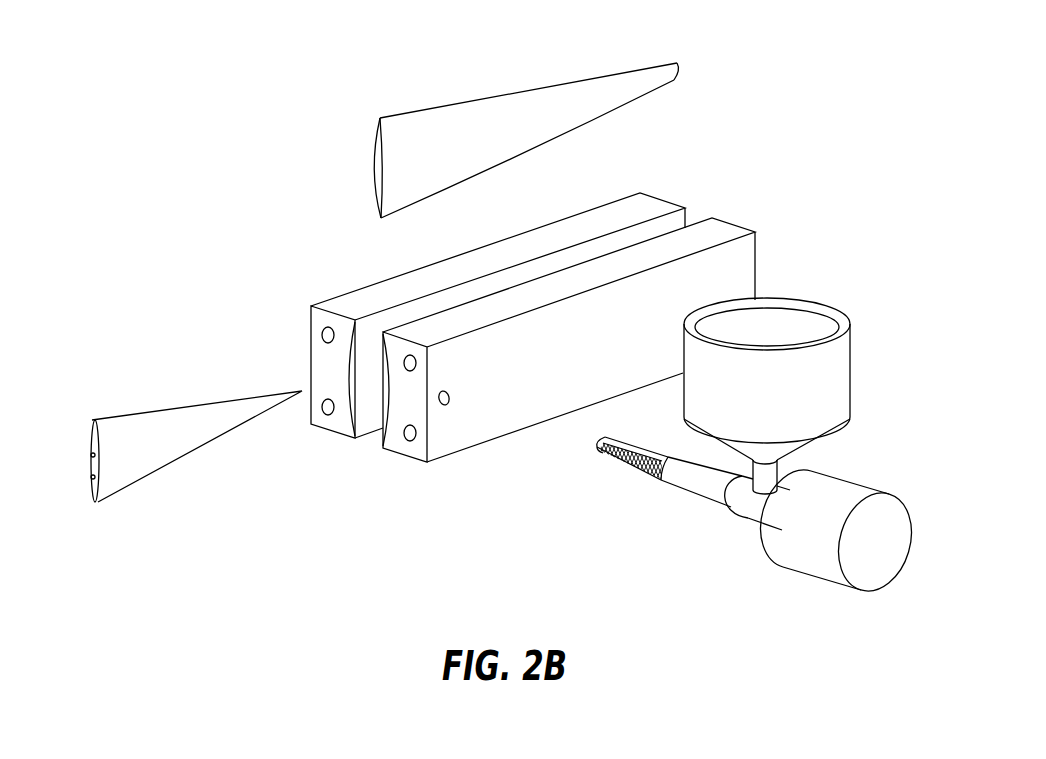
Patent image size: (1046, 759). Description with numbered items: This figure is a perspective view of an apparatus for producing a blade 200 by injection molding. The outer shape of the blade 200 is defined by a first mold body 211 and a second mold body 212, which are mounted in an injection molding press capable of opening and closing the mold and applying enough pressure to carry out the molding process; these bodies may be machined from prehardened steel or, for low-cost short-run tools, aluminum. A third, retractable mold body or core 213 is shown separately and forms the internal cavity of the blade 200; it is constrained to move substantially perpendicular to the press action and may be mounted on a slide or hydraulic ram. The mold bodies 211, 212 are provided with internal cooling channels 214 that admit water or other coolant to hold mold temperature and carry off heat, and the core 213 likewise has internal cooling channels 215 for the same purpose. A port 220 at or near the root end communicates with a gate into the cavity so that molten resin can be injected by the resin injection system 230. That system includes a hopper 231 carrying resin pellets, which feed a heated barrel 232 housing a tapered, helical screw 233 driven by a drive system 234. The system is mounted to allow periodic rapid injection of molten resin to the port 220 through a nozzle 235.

The blade 200 is at (502, 105).
The first mold body 211 is at (423, 328).
The second mold body 212 is at (328, 302).
The retractable mold body or core 213 is at (162, 413).
The internal cooling channels 214 is at (332, 414).
The internal cooling channels 215 is at (93, 480).
The port 220 is at (445, 405).
The resin injection system 230 is at (638, 555).
The hopper 231 is at (803, 328).
The heated barrel 232 is at (747, 518).
The tapered, helical screw 233 is at (630, 462).
The drive system 234 is at (817, 577).
The nozzle 235 is at (598, 445).